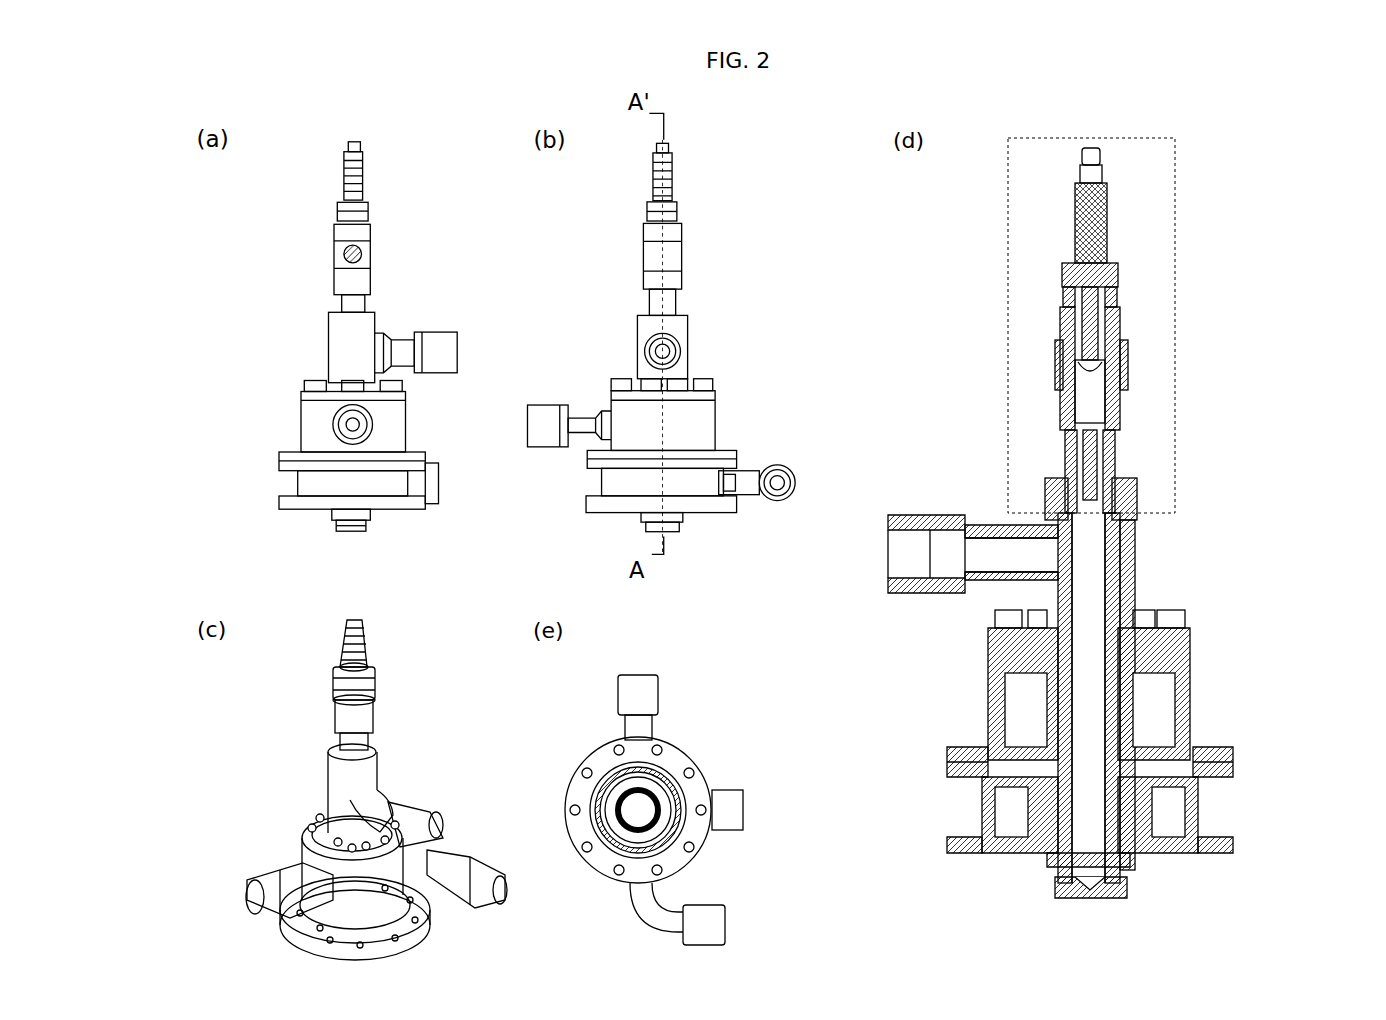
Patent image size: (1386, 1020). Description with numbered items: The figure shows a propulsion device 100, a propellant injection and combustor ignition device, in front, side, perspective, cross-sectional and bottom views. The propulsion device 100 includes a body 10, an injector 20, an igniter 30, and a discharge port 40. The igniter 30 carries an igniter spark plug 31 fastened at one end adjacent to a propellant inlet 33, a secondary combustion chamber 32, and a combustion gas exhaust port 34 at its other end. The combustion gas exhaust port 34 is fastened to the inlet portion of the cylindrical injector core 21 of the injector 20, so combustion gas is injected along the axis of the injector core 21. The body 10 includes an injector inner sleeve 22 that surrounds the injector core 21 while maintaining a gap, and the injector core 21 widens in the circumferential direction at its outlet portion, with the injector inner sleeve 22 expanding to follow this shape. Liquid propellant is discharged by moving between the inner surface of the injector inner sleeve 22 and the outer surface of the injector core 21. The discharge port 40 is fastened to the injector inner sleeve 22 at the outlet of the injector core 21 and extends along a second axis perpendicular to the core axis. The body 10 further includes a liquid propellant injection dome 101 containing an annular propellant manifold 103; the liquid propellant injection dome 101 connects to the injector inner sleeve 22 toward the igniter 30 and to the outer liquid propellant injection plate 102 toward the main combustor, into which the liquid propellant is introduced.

The propulsion device 100 is at (303, 148).
The body 10 is at (951, 814).
The injector 20 is at (1038, 882).
The injector core 21 is at (1083, 652).
The injector inner sleeve 22 is at (1137, 583).
The igniter 30 is at (1007, 347).
The igniter spark plug 31 is at (1080, 190).
The secondary combustion chamber 32 is at (1093, 400).
The propellant inlet 33 is at (343, 718).
The combustion gas exhaust port 34 is at (1127, 490).
The discharge port 40 is at (751, 716).
The liquid propellant injection dome 101 is at (1187, 703).
The liquid propellant injection plate 102 is at (1200, 812).
The propellant manifold 103 is at (258, 905).